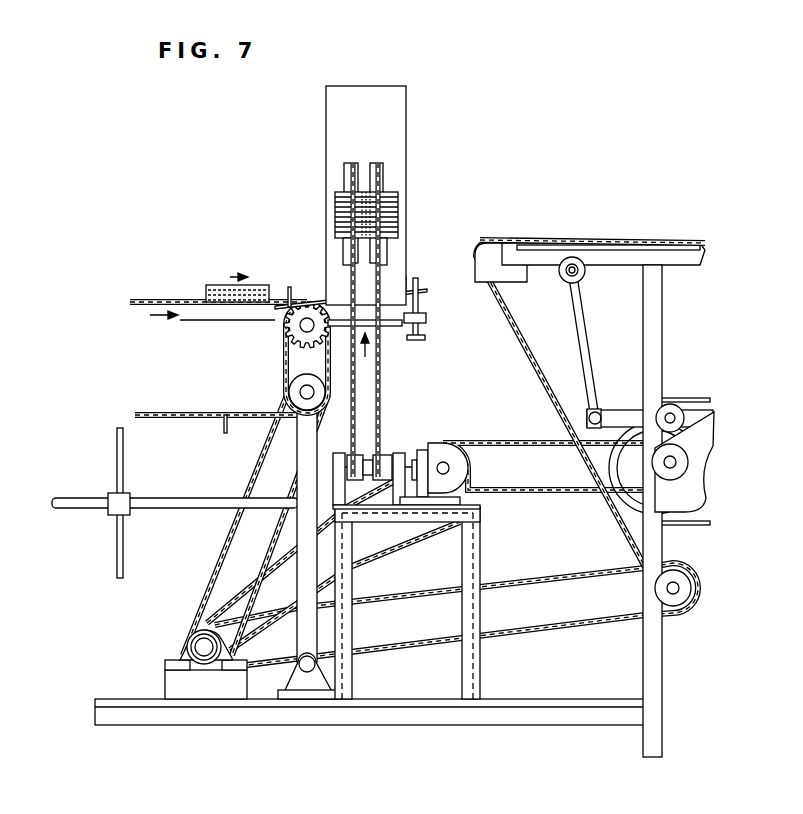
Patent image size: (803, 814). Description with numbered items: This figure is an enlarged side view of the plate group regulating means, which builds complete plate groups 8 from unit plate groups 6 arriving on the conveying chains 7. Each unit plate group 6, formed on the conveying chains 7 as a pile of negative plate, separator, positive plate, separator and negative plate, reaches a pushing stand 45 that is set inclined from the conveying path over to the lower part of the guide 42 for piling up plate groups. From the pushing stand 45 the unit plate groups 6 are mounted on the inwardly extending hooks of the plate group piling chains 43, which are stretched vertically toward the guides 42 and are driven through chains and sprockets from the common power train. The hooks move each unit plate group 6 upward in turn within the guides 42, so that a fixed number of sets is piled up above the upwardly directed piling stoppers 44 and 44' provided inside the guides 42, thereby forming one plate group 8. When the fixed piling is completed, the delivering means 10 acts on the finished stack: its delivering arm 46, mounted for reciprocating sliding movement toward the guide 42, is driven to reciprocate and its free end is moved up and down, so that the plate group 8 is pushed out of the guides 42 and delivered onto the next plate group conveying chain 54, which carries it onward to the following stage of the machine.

The unit plate group 6 is at (222, 279).
The conveying chain 7 is at (192, 302).
The plate group 8 is at (392, 184).
The delivering means 10 is at (527, 248).
The guide for piling up plate groups 42 is at (395, 105).
The plate group piling chain 43 is at (383, 367).
The piling stopper 44 is at (413, 243).
The piling stopper 44' is at (319, 238).
The pushing stand 45 is at (330, 277).
The delivering arm 46 is at (478, 240).
The plate group conveying chain 54 is at (640, 238).